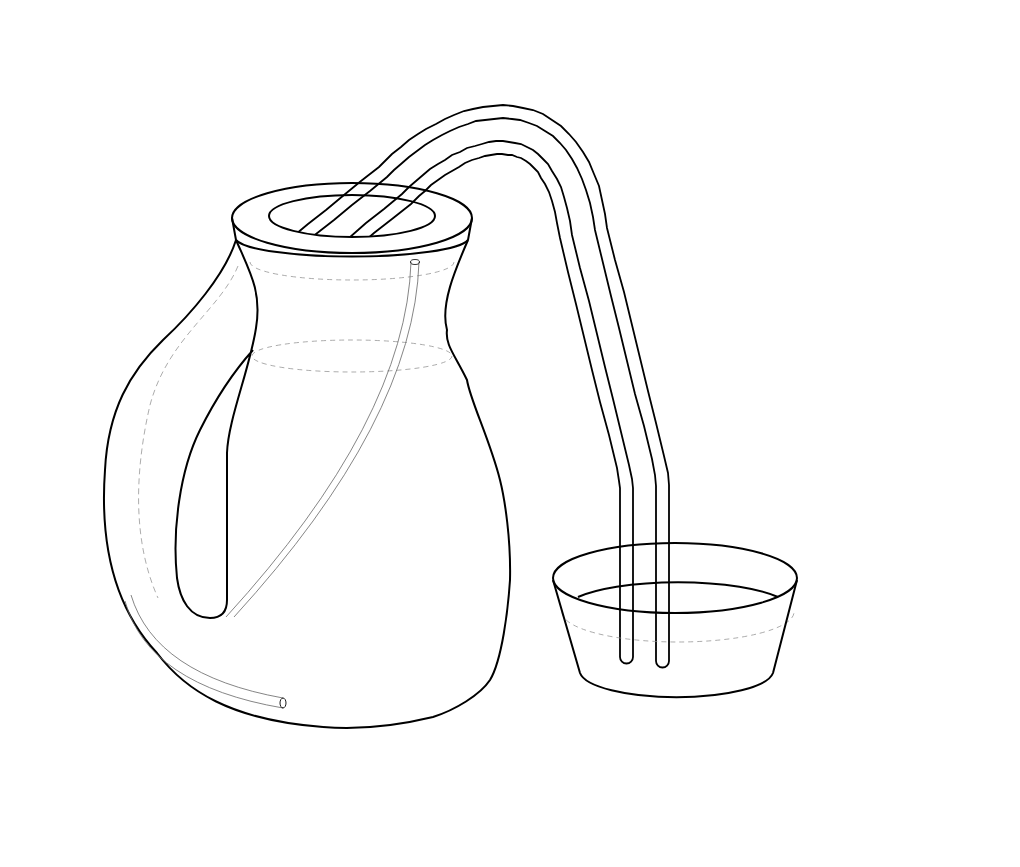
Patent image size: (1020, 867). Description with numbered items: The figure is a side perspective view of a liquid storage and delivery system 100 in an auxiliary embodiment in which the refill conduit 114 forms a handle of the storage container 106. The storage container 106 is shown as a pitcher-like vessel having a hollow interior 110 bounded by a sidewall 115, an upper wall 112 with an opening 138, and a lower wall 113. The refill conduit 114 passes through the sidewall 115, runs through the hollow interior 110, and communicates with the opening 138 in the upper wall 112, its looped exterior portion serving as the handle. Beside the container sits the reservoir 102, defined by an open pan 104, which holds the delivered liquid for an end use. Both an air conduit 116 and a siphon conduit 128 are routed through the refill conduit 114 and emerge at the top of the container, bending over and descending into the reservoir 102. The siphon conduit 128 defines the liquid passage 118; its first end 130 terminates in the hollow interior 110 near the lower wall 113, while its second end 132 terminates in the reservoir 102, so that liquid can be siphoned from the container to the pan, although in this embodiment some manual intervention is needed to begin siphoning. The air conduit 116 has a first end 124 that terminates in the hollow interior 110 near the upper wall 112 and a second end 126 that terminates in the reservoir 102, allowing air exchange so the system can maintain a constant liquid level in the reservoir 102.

The liquid storage and delivery system 100 is at (432, 88).
The reservoir 102 is at (797, 570).
The open pan 104 is at (793, 597).
The storage container 106 is at (225, 193).
The hollow interior 110 is at (317, 318).
The upper wall 112 is at (290, 193).
The lower wall 113 is at (287, 723).
The refill conduit 114 is at (163, 340).
The sidewall 115 is at (227, 447).
The air conduit 116 is at (572, 240).
The liquid passage 118 is at (593, 177).
The first end of the air conduit 124 is at (410, 320).
The second end of the air conduit 126 is at (620, 532).
The siphon conduit 128 is at (479, 383).
The first end of the siphon conduit 130 is at (210, 688).
The second end of the siphon conduit 132 is at (668, 532).
The opening 138 is at (337, 190).